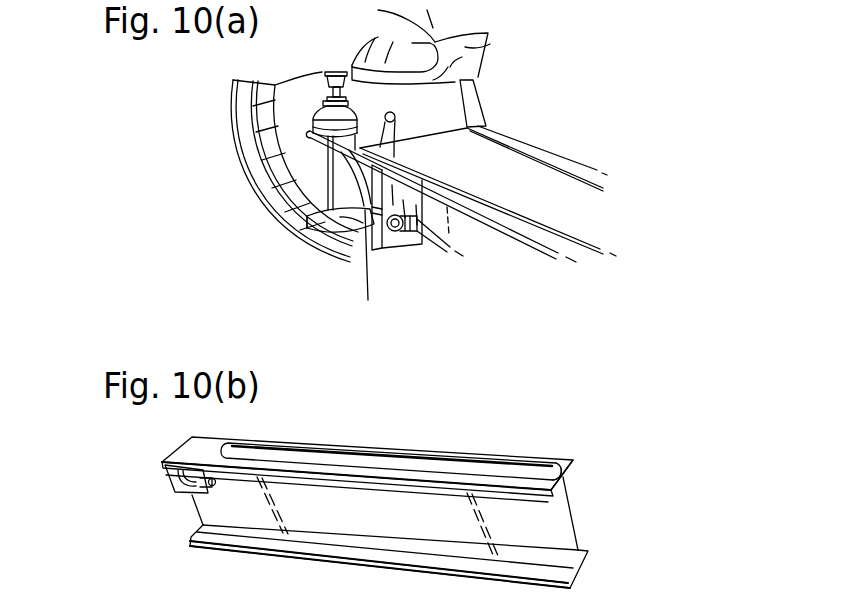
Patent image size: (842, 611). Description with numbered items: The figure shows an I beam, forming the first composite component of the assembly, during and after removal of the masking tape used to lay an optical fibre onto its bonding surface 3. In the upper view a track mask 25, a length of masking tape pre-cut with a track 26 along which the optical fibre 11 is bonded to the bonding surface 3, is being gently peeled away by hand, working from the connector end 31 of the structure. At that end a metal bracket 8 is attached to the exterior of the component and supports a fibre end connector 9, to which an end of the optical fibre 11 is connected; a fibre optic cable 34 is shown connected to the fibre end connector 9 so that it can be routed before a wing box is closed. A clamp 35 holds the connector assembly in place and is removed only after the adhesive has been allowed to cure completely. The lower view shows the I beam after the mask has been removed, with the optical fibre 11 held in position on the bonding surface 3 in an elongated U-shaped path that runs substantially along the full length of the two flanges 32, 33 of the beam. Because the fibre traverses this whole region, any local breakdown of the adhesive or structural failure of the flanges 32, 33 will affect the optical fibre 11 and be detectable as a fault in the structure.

In FIG. 10A, the bonding surface 3 is at (332, 142).
In FIG. 10B, the bonding surface 3 is at (290, 456).
In FIG. 10A, the metal bracket 8 is at (355, 213).
In FIG. 10A, the fibre end connector 9 is at (372, 212).
In FIG. 10B, the optical fibre 11 is at (352, 446).
In FIG. 10A, the track mask 25 is at (468, 48).
In FIG. 10A, the track 26 is at (518, 142).
In FIG. 10A, the connector end 31 is at (310, 130).
In FIG. 10B, the connector end 31 is at (163, 461).
In FIG. 10B, the flange 32 is at (566, 462).
In FIG. 10B, the flange 33 is at (550, 489).
In FIG. 10A, the fibre optic cable 34 is at (402, 232).
In FIG. 10A, the clamp 35 is at (253, 167).